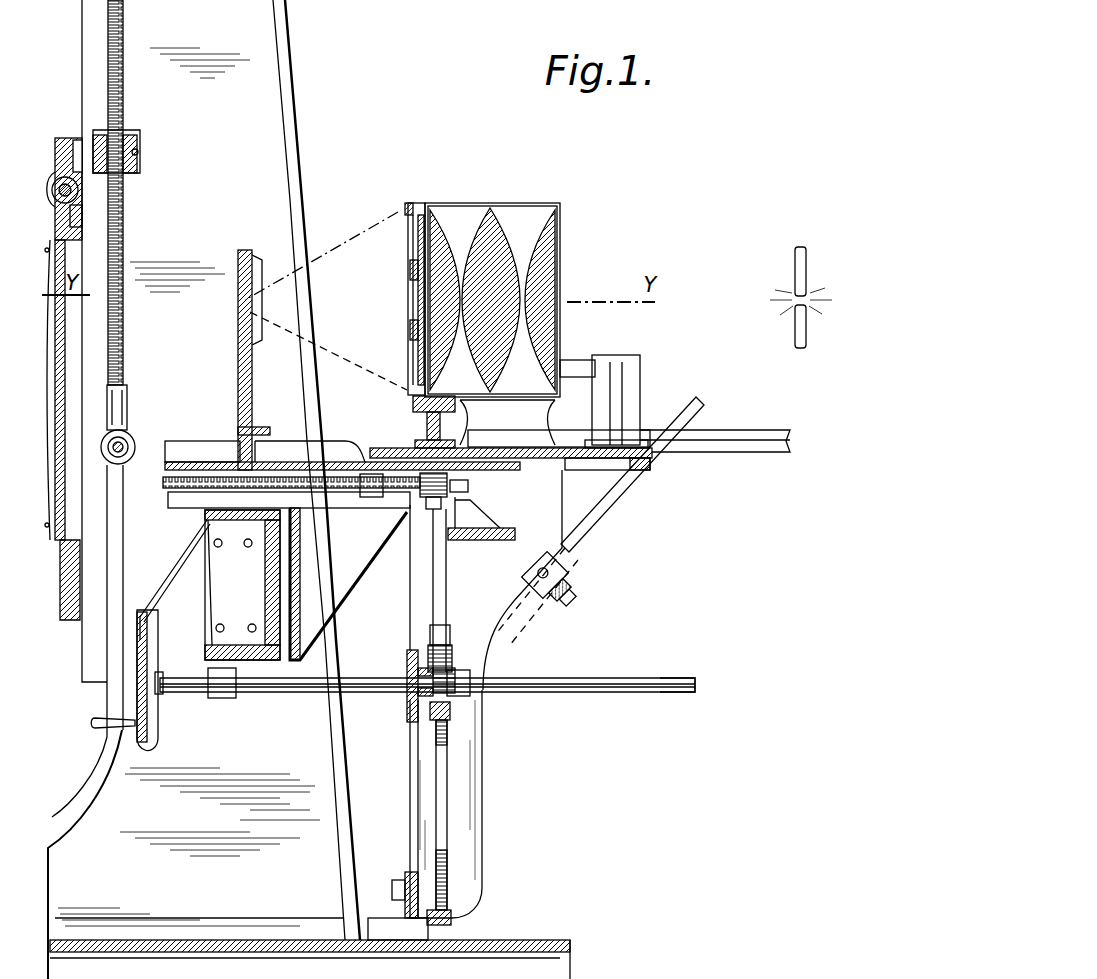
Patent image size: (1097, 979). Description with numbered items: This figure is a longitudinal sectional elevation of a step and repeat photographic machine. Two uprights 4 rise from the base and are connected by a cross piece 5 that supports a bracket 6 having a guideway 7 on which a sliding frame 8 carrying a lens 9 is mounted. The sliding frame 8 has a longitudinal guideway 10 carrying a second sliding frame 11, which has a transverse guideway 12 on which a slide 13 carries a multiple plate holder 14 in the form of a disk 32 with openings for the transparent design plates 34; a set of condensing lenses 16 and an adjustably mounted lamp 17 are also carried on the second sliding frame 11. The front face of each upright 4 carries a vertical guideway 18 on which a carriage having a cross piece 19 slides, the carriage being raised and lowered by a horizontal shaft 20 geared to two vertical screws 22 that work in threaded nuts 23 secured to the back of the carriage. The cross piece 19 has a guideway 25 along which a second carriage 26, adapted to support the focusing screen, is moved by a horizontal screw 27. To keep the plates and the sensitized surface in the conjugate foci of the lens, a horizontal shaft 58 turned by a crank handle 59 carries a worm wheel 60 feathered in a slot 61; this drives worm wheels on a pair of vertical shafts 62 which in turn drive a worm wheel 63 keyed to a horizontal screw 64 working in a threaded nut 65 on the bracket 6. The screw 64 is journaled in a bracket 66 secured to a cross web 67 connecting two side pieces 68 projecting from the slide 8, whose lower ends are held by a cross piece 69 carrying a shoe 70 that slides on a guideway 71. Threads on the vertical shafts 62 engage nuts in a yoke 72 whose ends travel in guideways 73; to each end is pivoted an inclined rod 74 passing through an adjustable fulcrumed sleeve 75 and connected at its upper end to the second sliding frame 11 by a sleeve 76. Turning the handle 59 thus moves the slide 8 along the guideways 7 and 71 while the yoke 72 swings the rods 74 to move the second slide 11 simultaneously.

The upright 4 is at (265, 132).
The cross piece 5 is at (210, 585).
The bracket 6 is at (350, 565).
The guideway 7 is at (172, 476).
The sliding frame 8 is at (215, 444).
The lens 9 is at (240, 300).
The longitudinal guideway 10 is at (372, 446).
The second sliding frame 11 is at (570, 440).
The transverse guideway 12 is at (425, 418).
The slide 13 is at (410, 398).
The multiple plate holder 14 is at (422, 205).
The condensing lenses 16 is at (470, 222).
The lamp 17 is at (795, 295).
The vertical guideway 18 is at (81, 66).
The cross piece 19 is at (68, 150).
The horizontal shaft 20 is at (135, 440).
The vertical screw 22 is at (123, 48).
The threaded nut 23 is at (140, 132).
The guideway 25 is at (84, 214).
The second carriage 26 is at (70, 430).
The horizontal screw 27 is at (78, 192).
The disk 32 is at (410, 208).
The transparent design plate 34 is at (410, 303).
The horizontal shaft 58 is at (655, 693).
The crank handle 59 is at (95, 722).
The worm wheel 60 is at (458, 685).
The slot 61 is at (572, 678).
The vertical shaft 62 is at (437, 598).
The worm wheel 63 is at (433, 497).
The horizontal screw 64 is at (180, 490).
The threaded nut 65 is at (373, 496).
The bracket 66 is at (478, 508).
The cross web 67 is at (478, 541).
The side piece 68 is at (482, 750).
The cross piece 69 is at (405, 875).
The shoe 70 is at (382, 918).
The guideway 71 is at (487, 940).
The yoke 72 is at (450, 711).
The guideway 73 is at (442, 797).
The rod 74 is at (583, 532).
The fulcrumed sleeve 75 is at (540, 590).
The sleeve 76 is at (640, 472).